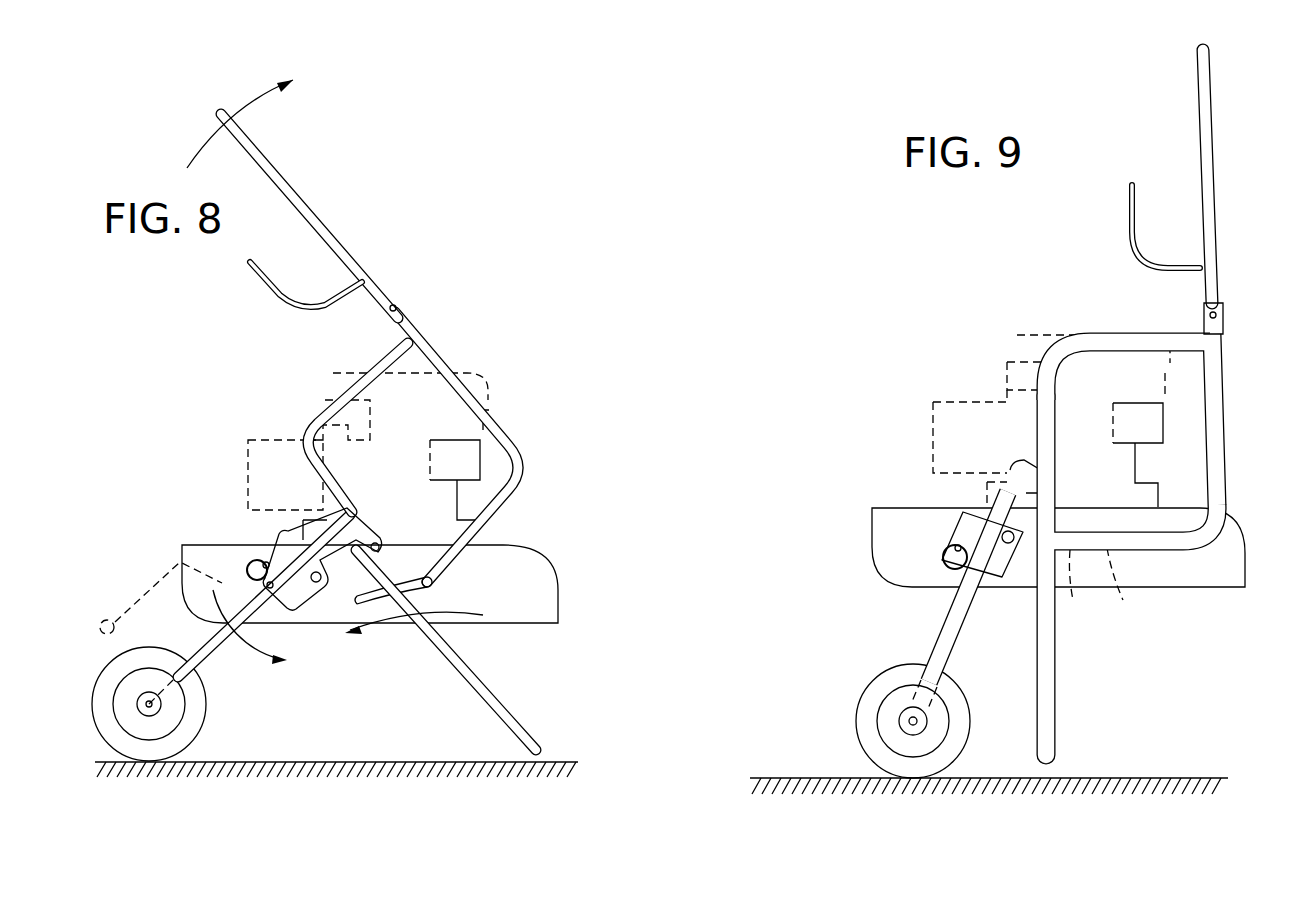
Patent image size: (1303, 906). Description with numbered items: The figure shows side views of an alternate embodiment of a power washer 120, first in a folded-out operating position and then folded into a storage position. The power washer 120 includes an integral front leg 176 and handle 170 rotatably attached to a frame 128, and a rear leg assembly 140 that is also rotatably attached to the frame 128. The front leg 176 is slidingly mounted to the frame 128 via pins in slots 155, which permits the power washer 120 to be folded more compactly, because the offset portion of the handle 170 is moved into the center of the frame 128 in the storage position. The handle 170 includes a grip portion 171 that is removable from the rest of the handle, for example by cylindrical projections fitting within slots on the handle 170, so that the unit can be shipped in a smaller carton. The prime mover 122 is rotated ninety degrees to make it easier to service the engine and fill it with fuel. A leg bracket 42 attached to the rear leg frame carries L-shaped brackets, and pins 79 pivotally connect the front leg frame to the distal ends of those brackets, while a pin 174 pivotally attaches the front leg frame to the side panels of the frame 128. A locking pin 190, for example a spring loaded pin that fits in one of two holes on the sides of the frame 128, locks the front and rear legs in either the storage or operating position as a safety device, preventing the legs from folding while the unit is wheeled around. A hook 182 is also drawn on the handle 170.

In FIG. 8, the power washer 120 is at (408, 268).
In FIG. 8, the prime mover 122 is at (488, 392).
In FIG. 9, the prime mover 122 is at (1022, 350).
In FIG. 8, the frame 128 is at (528, 570).
In FIG. 9, the frame 128 is at (898, 517).
In FIG. 8, the rear leg assembly 140 is at (205, 662).
In FIG. 9, the rear leg assembly 140 is at (952, 622).
In FIG. 8, the slots 155 is at (357, 597).
In FIG. 9, the slots 155 is at (1123, 560).
In FIG. 8, the handle 170 is at (448, 362).
In FIG. 9, the handle 170 is at (1124, 544).
In FIG. 8, the grip portion 171 is at (258, 148).
In FIG. 9, the grip portion 171 is at (1202, 132).
In FIG. 8, the pin 174 is at (432, 582).
In FIG. 9, the pin 174 is at (1073, 560).
In FIG. 8, the front leg 176 is at (468, 680).
In FIG. 9, the front leg 176 is at (1046, 675).
In FIG. 8, the hook 182 is at (250, 263).
In FIG. 9, the hook 182 is at (1130, 218).
In FIG. 8, the locking pin 190 is at (250, 563).
In FIG. 8, the leg bracket 42 is at (350, 513).
In FIG. 9, the leg bracket 42 is at (997, 518).
In FIG. 8, the pin 79 is at (376, 545).